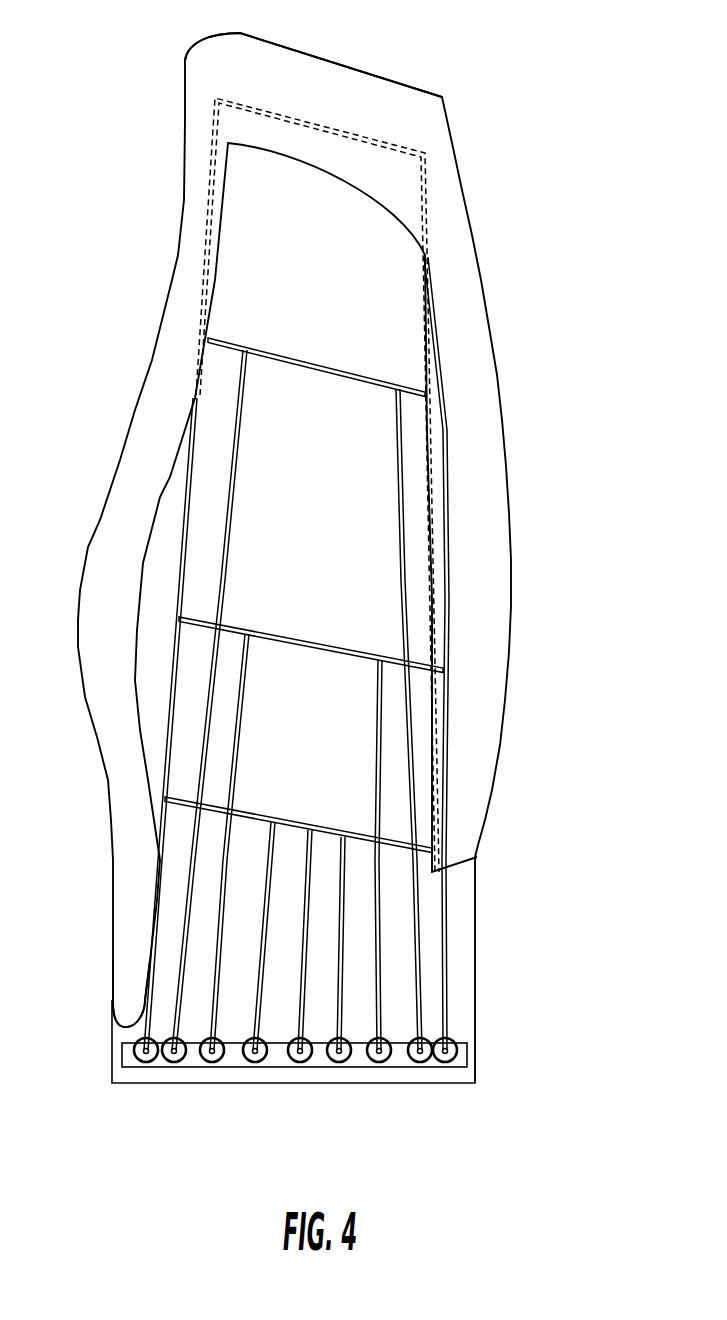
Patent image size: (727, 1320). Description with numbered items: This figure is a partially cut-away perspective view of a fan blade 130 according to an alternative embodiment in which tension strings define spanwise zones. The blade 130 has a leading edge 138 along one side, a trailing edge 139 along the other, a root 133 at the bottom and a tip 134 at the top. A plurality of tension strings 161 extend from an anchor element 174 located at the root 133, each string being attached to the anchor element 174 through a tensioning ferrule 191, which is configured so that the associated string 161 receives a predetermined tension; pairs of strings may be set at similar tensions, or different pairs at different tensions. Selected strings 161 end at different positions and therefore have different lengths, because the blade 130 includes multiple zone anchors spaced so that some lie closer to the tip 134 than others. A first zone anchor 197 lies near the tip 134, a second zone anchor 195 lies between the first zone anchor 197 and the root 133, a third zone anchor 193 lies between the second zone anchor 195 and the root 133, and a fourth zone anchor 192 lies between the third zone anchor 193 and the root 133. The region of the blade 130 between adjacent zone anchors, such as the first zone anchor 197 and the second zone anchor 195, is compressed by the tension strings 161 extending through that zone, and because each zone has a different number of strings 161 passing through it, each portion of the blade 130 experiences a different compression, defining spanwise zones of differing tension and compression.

The blade 130 is at (142, 450).
The tip 134 is at (367, 62).
The first zone anchor 197 is at (373, 137).
The second zone anchor 195 is at (428, 392).
The third zone anchor 193 is at (445, 670).
The fourth zone anchor 192 is at (438, 851).
The tension strings 161 is at (402, 518).
The tensioning ferrule 191 is at (142, 1062).
The anchor element 174 is at (125, 1057).
The root 133 is at (475, 1087).
The trailing edge 139 is at (475, 1020).
The leading edge 138 is at (112, 992).